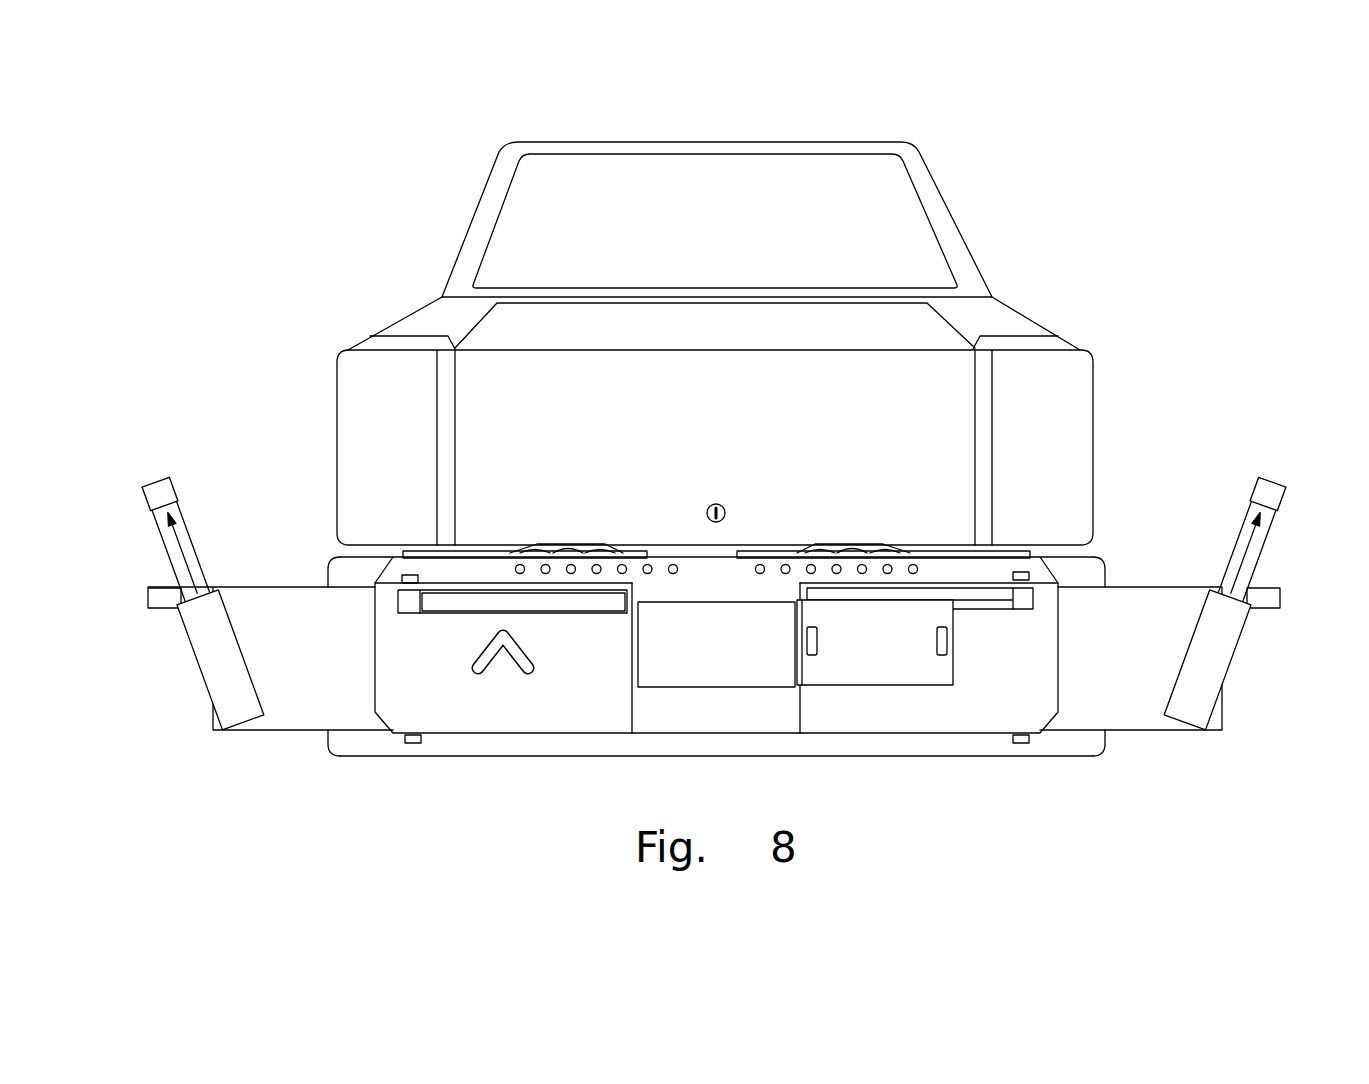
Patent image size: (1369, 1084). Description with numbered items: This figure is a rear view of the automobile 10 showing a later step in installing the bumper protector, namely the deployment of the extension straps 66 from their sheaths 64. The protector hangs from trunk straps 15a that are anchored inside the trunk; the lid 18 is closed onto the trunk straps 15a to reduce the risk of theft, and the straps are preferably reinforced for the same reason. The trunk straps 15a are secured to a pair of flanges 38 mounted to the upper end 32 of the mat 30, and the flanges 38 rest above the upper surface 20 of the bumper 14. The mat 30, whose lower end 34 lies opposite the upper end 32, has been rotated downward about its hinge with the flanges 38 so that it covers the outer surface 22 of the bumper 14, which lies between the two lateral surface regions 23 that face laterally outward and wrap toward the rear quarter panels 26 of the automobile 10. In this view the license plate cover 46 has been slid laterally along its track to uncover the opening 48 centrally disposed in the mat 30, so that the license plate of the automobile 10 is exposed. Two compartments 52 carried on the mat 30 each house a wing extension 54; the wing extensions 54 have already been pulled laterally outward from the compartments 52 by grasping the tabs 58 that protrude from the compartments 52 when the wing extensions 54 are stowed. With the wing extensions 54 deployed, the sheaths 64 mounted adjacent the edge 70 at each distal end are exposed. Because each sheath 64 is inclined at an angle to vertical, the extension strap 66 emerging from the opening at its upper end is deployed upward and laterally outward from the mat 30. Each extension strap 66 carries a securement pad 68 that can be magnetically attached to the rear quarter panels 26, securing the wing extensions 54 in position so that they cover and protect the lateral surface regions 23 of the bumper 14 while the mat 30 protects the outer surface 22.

The automobile 10 is at (382, 171).
The bumper 14 is at (448, 755).
The trunk straps 15a is at (570, 545).
The lid 18 is at (774, 322).
The upper surface 20 is at (377, 555).
The outer surface 22 is at (846, 745).
The lateral surface regions 23 is at (1107, 567).
The rear quarter panels 26 is at (358, 383).
The mat 30 is at (713, 717).
The upper end 32 is at (718, 558).
The lower end 34 is at (677, 735).
The flanges 38 is at (597, 548).
The license plate cover 46 is at (866, 675).
The opening 48 is at (685, 683).
The compartments 52 is at (532, 723).
The wing extensions 54 is at (283, 598).
The tabs 58 is at (153, 602).
The sheaths 64 is at (225, 693).
The extension straps 66 is at (167, 540).
The securement pad 68 is at (162, 488).
The edge 70 is at (188, 667).